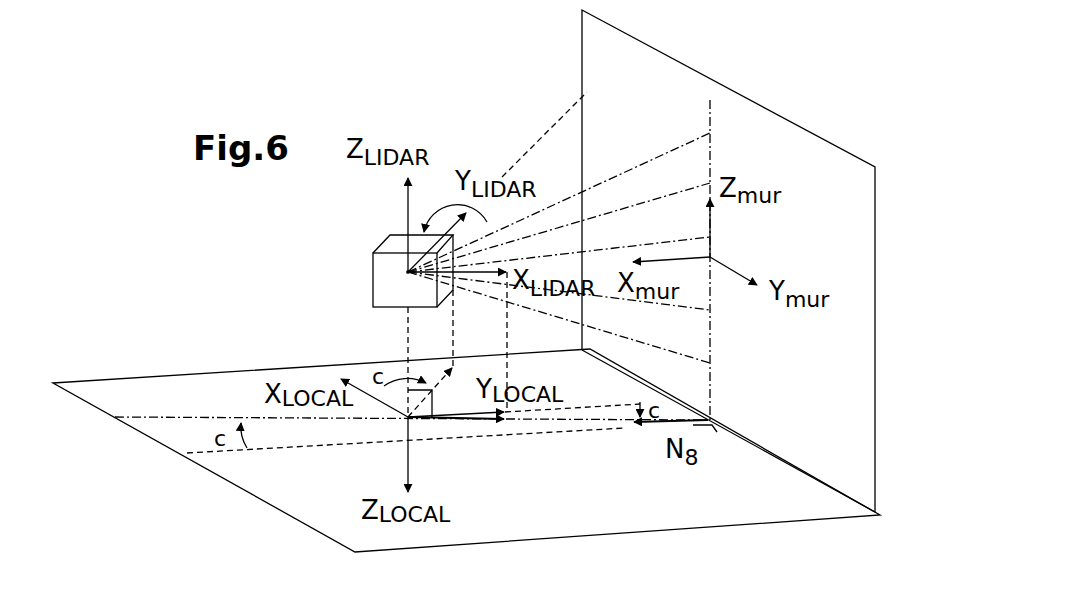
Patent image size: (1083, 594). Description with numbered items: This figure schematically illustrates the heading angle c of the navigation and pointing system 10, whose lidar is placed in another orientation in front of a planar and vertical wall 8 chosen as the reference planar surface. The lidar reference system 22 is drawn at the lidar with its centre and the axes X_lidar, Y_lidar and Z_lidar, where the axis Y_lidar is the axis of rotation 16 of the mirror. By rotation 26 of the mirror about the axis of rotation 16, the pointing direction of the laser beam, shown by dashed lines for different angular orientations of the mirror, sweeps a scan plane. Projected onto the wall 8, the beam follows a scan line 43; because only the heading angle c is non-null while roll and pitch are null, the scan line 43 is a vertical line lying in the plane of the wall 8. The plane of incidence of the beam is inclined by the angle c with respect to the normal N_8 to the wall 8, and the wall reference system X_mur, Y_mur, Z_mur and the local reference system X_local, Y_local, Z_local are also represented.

The wall 8 is at (593, 50).
The navigation and pointing system 10 is at (385, 250).
The axis of rotation 16 is at (542, 137).
The lidar reference system 22 is at (402, 271).
The rotation 26 is at (438, 199).
The scan line 43 is at (710, 148).